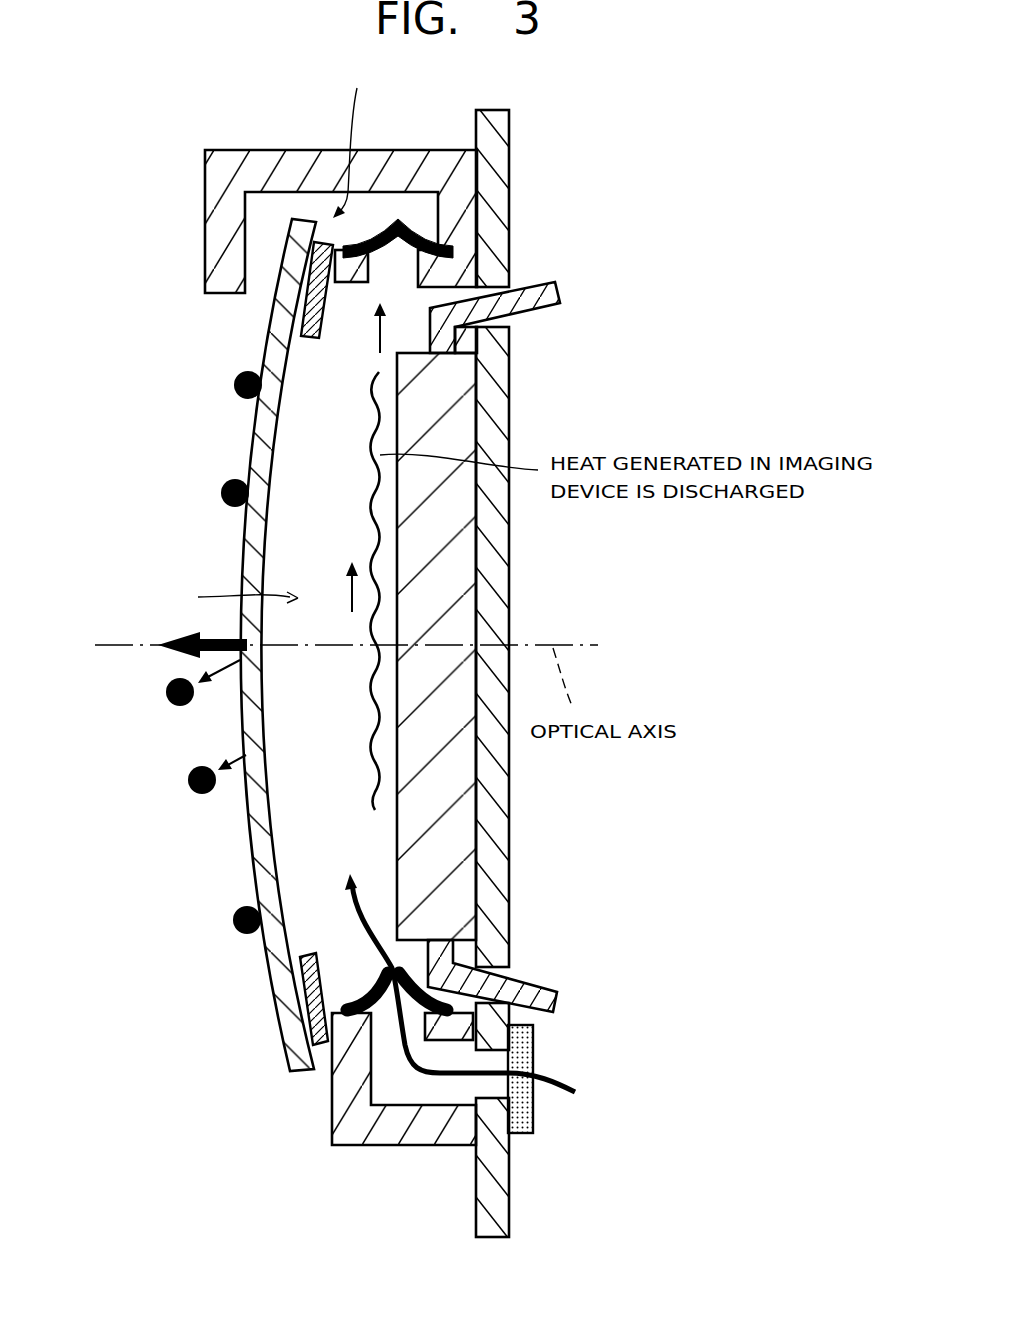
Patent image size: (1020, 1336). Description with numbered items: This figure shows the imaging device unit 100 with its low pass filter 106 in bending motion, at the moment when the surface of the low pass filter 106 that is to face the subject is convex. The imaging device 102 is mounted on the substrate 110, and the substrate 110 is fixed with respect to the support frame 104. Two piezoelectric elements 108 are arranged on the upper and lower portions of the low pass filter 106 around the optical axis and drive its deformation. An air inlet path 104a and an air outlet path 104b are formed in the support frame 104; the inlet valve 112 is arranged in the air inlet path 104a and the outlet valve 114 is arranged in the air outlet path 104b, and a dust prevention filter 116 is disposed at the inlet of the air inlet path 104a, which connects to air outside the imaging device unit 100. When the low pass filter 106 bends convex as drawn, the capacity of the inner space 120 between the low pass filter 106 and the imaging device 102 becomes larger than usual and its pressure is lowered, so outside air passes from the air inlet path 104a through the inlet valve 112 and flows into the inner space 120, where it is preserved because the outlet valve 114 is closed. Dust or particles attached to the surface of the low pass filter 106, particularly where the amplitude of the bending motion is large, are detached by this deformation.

The imaging device unit 100 is at (597, 1172).
The imaging device 102 is at (445, 825).
The support frame 104 is at (288, 165).
The air inlet path 104a is at (431, 1093).
The air outlet path 104b is at (368, 137).
The low pass filter 106 is at (255, 552).
The piezoelectric element 108 is at (308, 318).
The substrate 110 is at (497, 565).
The inlet valve 112 is at (383, 1000).
The outlet valve 114 is at (413, 240).
The dust prevention filter 116 is at (525, 1047).
The inner space 120 is at (225, 597).